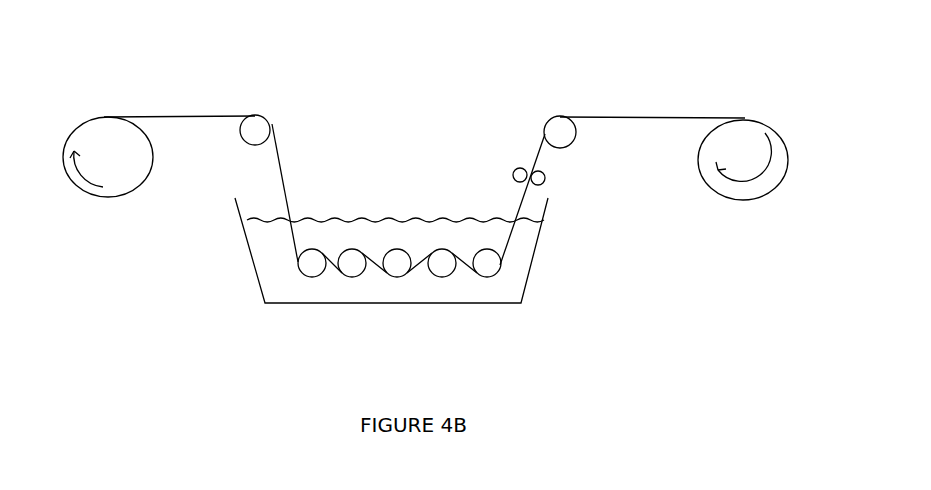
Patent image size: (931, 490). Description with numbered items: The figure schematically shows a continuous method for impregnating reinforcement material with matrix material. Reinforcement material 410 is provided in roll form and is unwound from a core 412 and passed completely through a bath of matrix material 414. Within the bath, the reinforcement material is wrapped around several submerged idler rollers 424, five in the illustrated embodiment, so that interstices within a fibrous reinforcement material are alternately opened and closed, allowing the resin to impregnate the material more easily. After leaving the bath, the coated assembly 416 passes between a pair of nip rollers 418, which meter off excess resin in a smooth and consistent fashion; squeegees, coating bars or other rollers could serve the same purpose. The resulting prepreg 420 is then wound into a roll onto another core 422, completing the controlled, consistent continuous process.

The reinforcement material 410 is at (183, 115).
The core 412 is at (113, 162).
The bath of matrix material 414 is at (410, 230).
The coated assembly 416 is at (523, 200).
The nip rollers 418 is at (528, 168).
The prepreg 420 is at (655, 118).
The core 422 is at (747, 160).
The idler rollers 424 is at (572, 318).